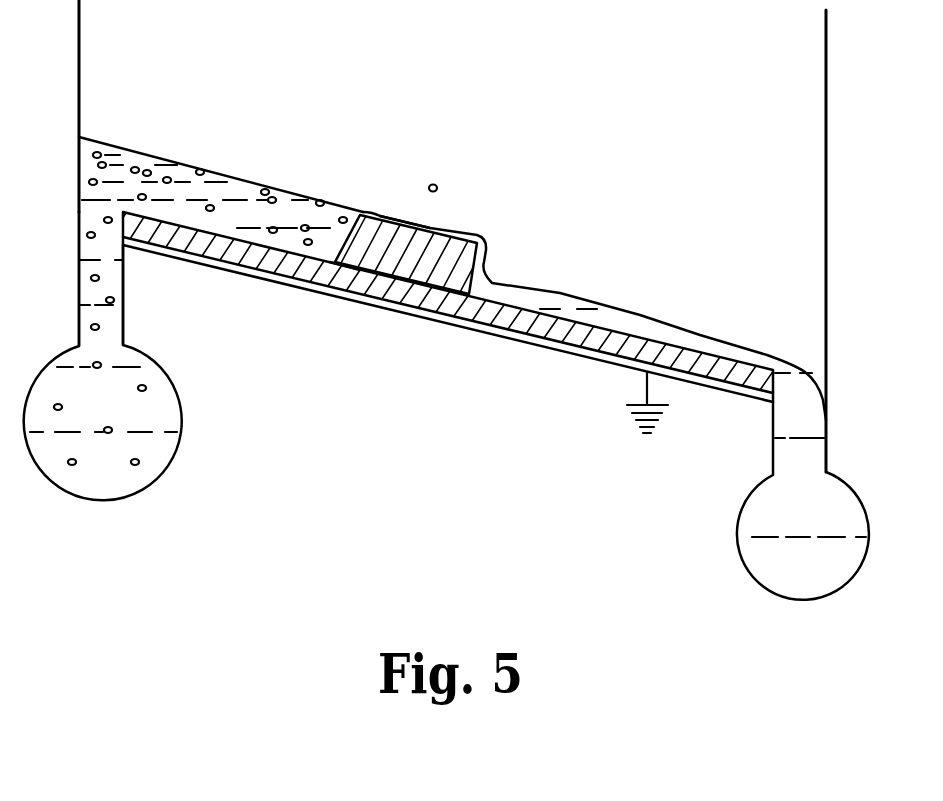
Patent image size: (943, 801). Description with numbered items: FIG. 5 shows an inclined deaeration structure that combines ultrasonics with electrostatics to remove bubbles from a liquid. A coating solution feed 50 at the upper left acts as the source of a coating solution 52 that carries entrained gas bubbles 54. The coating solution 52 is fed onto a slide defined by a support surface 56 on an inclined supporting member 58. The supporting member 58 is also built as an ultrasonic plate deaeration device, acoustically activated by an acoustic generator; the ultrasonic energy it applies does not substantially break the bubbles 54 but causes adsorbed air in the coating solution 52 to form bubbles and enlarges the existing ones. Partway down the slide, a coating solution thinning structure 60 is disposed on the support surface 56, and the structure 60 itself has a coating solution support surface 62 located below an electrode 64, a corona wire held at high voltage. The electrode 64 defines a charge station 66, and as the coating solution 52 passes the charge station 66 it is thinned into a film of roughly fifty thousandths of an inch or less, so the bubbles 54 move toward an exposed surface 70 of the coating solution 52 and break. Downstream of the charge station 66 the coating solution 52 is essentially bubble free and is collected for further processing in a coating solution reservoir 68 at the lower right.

The coating solution feed 50 is at (147, 506).
The coating solution 52 is at (112, 338).
The gas bubbles 54 is at (137, 167).
The support surface 56 is at (172, 223).
The supporting member 58 is at (266, 284).
The coating solution thinning structure 60 is at (346, 247).
The coating solution support surface 62 is at (382, 212).
The electrode 64 is at (435, 184).
The charge station 66 is at (401, 150).
The coating solution reservoir 68 is at (741, 563).
The exposed surface 70 is at (457, 227).